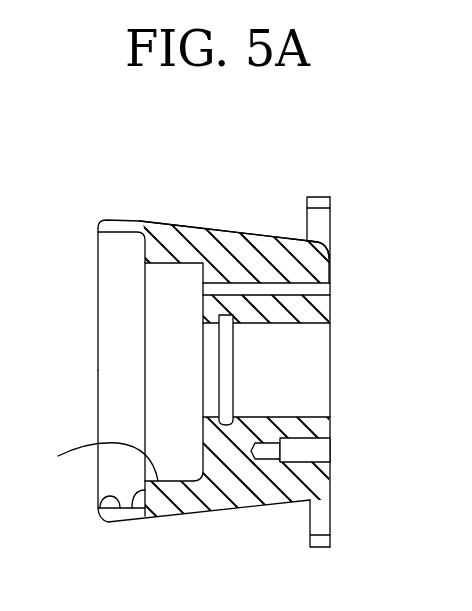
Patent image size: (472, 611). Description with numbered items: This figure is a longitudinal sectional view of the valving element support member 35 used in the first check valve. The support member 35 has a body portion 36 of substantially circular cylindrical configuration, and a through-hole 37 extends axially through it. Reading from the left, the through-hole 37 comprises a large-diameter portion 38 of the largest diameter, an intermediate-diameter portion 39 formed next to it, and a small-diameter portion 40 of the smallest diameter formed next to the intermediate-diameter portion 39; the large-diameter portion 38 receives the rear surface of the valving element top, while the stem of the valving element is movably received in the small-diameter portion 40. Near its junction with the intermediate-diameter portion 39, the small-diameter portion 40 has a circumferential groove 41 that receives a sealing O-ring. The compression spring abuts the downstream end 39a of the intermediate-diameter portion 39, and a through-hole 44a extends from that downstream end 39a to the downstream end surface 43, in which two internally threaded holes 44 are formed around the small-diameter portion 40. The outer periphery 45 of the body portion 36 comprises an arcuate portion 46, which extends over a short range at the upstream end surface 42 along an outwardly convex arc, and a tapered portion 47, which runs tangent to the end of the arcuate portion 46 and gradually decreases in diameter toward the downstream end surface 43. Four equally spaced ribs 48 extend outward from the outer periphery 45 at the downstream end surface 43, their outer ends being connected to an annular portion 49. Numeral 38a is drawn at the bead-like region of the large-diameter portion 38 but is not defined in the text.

The valving element support member 35 is at (286, 200).
The body portion 36 is at (213, 247).
The through-hole 37 is at (103, 372).
The large-diameter portion 38 is at (102, 494).
The inner bead 38a is at (137, 495).
The intermediate-diameter portion 39 is at (93, 462).
The downstream end of the intermediate-diameter portion 39a is at (196, 462).
The small-diameter portion 40 is at (307, 414).
The circumferential groove 41 is at (233, 418).
The upstream end surface 42 is at (97, 283).
The downstream end surface 43 is at (332, 267).
The internally threaded hole 44 is at (312, 455).
The through-hole 44a is at (325, 285).
The outer periphery 45 is at (178, 222).
The arcuate portion 46 is at (103, 221).
The tapered portion 47 is at (258, 235).
The rib 48 is at (323, 223).
The annular portion 49 is at (318, 197).